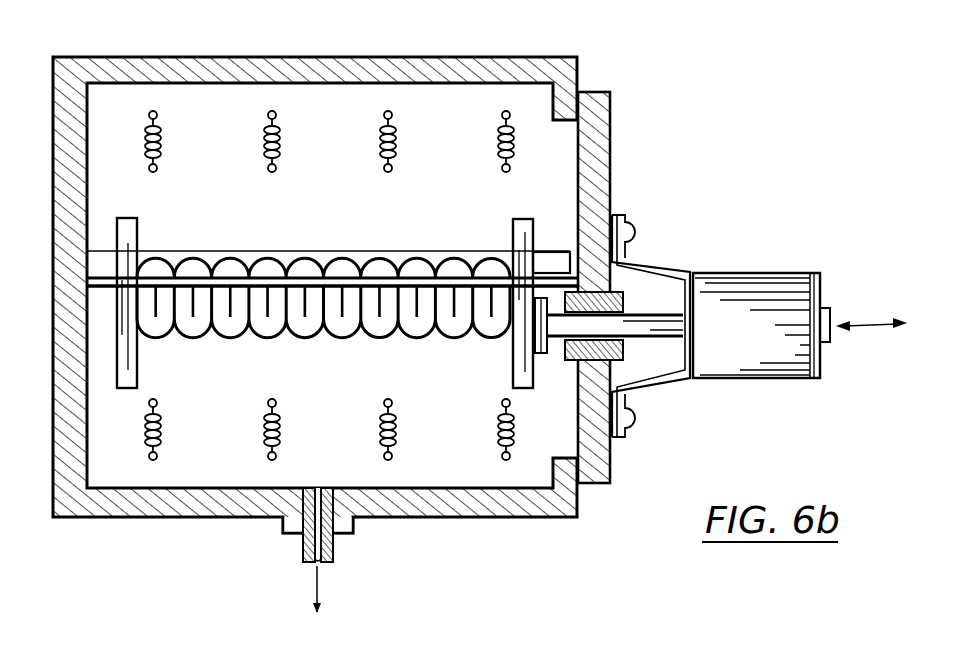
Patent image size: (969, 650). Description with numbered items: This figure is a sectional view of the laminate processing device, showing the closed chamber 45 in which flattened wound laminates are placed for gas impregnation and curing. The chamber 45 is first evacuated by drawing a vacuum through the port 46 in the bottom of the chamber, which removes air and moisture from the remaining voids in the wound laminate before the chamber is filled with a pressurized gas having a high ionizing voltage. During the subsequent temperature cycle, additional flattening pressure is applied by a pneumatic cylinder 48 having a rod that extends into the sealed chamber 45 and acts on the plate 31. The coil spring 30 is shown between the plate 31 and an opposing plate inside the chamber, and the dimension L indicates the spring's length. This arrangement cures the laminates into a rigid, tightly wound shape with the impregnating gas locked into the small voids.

The closed chamber 45 is at (509, 51).
The coil spring 30 is at (380, 241).
The plate 31 is at (511, 371).
The spring length L is at (377, 338).
The port 46 is at (335, 547).
The pneumatic cylinder 48 is at (765, 381).